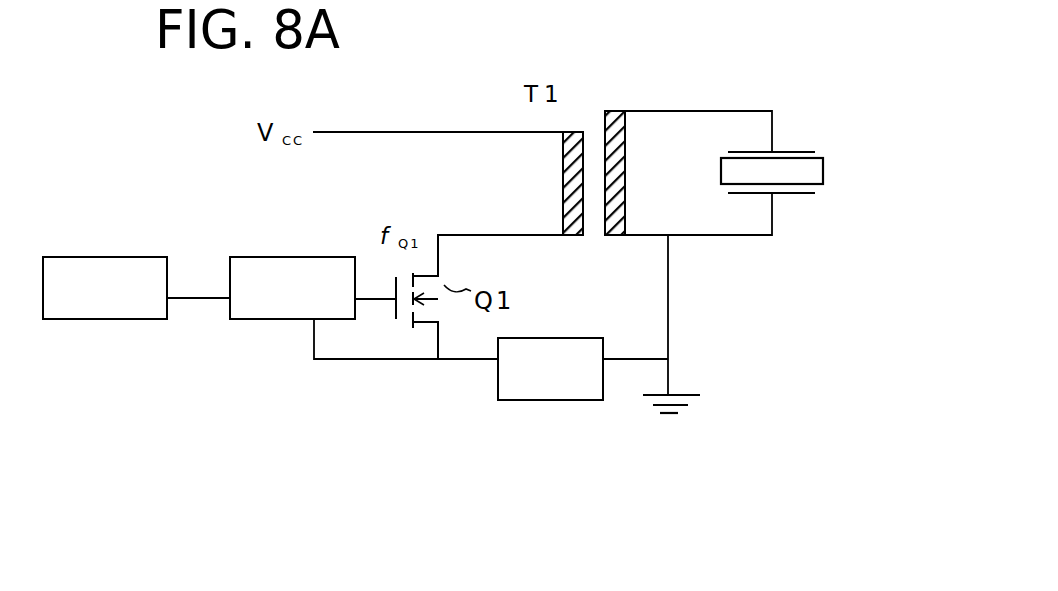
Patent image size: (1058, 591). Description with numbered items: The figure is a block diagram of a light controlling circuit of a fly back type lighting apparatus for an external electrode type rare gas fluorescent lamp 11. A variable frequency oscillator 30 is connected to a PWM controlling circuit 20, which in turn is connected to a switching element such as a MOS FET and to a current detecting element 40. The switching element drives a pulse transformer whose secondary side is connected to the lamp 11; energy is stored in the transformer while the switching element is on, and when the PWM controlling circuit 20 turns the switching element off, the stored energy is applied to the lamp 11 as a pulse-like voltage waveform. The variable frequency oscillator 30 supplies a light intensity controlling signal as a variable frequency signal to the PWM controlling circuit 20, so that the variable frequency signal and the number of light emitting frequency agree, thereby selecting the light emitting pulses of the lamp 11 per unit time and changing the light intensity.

The external electrode type rare gas fluorescent lamp 11 is at (832, 165).
The PWM controlling circuit 20 is at (258, 319).
The variable frequency oscillator 30 is at (78, 319).
The current detecting element 40 is at (560, 400).